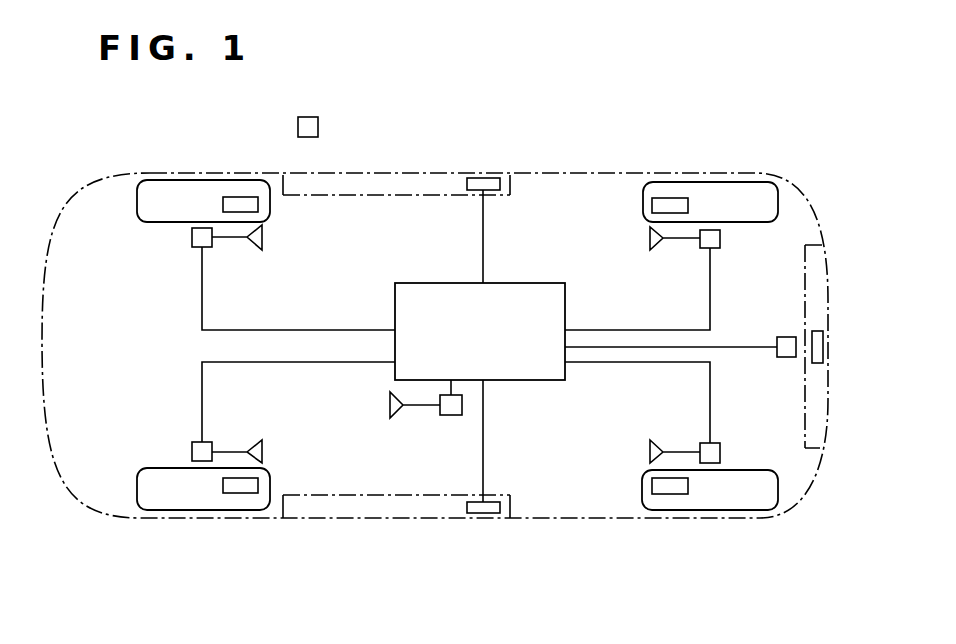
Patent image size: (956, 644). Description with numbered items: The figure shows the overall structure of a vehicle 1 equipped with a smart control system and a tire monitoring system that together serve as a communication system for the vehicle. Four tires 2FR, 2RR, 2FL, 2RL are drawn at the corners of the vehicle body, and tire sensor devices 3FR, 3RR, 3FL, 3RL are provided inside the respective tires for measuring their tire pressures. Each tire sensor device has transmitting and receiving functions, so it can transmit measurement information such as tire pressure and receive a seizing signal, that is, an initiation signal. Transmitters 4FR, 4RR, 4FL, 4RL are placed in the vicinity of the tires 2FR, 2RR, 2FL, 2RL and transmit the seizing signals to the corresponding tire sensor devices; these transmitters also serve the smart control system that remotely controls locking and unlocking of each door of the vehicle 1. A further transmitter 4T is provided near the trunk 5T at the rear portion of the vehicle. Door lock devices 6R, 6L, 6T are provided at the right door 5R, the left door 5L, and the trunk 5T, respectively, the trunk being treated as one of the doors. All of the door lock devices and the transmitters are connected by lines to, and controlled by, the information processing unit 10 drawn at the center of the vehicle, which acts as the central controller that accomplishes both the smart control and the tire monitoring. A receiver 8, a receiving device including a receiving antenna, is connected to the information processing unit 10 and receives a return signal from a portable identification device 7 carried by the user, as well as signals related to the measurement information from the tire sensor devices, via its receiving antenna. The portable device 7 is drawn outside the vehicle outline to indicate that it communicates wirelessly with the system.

The vehicle 1 is at (535, 170).
The tire 2FR is at (177, 180).
The tire 2RR is at (643, 202).
The tire 2FL is at (228, 510).
The tire 2RL is at (722, 510).
The tire sensor device 3FR is at (258, 205).
The tire sensor device 3RR is at (675, 198).
The tire sensor device 3FL is at (258, 484).
The tire sensor device 3RL is at (652, 483).
The transmitter 4FR is at (192, 237).
The transmitter 4RR is at (703, 248).
The transmitter 4FL is at (192, 452).
The transmitter 4RL is at (700, 445).
The transmitter 4T is at (777, 343).
The right door 5R is at (400, 193).
The left door 5L is at (388, 497).
The trunk 5T is at (803, 375).
The door lock device 6R is at (481, 178).
The door lock device 6L is at (483, 513).
The door lock device 6T is at (820, 331).
The portable identification device 7 is at (298, 132).
The receiver 8 is at (452, 415).
The information processing unit 10 is at (512, 381).